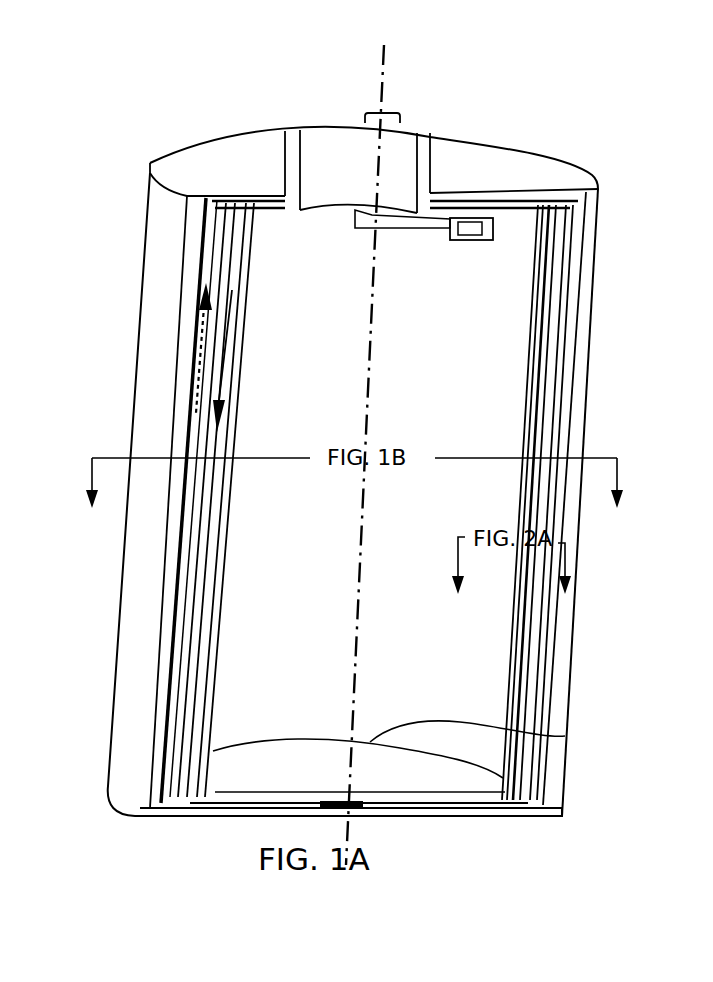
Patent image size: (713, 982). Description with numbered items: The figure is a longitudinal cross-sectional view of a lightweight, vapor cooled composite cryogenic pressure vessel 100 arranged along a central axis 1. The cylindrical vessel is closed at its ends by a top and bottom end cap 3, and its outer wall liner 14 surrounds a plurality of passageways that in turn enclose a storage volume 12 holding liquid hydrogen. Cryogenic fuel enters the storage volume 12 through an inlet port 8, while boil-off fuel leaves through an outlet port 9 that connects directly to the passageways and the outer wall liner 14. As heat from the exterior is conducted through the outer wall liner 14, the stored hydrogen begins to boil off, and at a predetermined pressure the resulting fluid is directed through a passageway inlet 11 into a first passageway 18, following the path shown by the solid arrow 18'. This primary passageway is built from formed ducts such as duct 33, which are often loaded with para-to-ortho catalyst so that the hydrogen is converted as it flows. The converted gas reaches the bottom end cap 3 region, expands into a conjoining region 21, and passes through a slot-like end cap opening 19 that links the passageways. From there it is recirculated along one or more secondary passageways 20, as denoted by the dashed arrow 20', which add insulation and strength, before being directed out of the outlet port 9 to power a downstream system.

The vapor cooled composite cryogenic pressure vessel 100 is at (192, 122).
The central axis 1 is at (370, 380).
The end cap 3 is at (501, 183).
The inlet port 8 is at (323, 147).
The outlet port 9 is at (380, 121).
The passageway inlet 11 is at (472, 240).
The storage volume 12 is at (461, 394).
The outer wall liner 14 is at (597, 237).
The first passageway 18 is at (253, 500).
The solid arrow 18' is at (259, 500).
The end cap opening 19 is at (565, 736).
The secondary passageway 20 is at (159, 498).
The dashed arrow 20' is at (150, 348).
The conjoining region 21 is at (217, 797).
The formed duct 33 is at (705, 340).